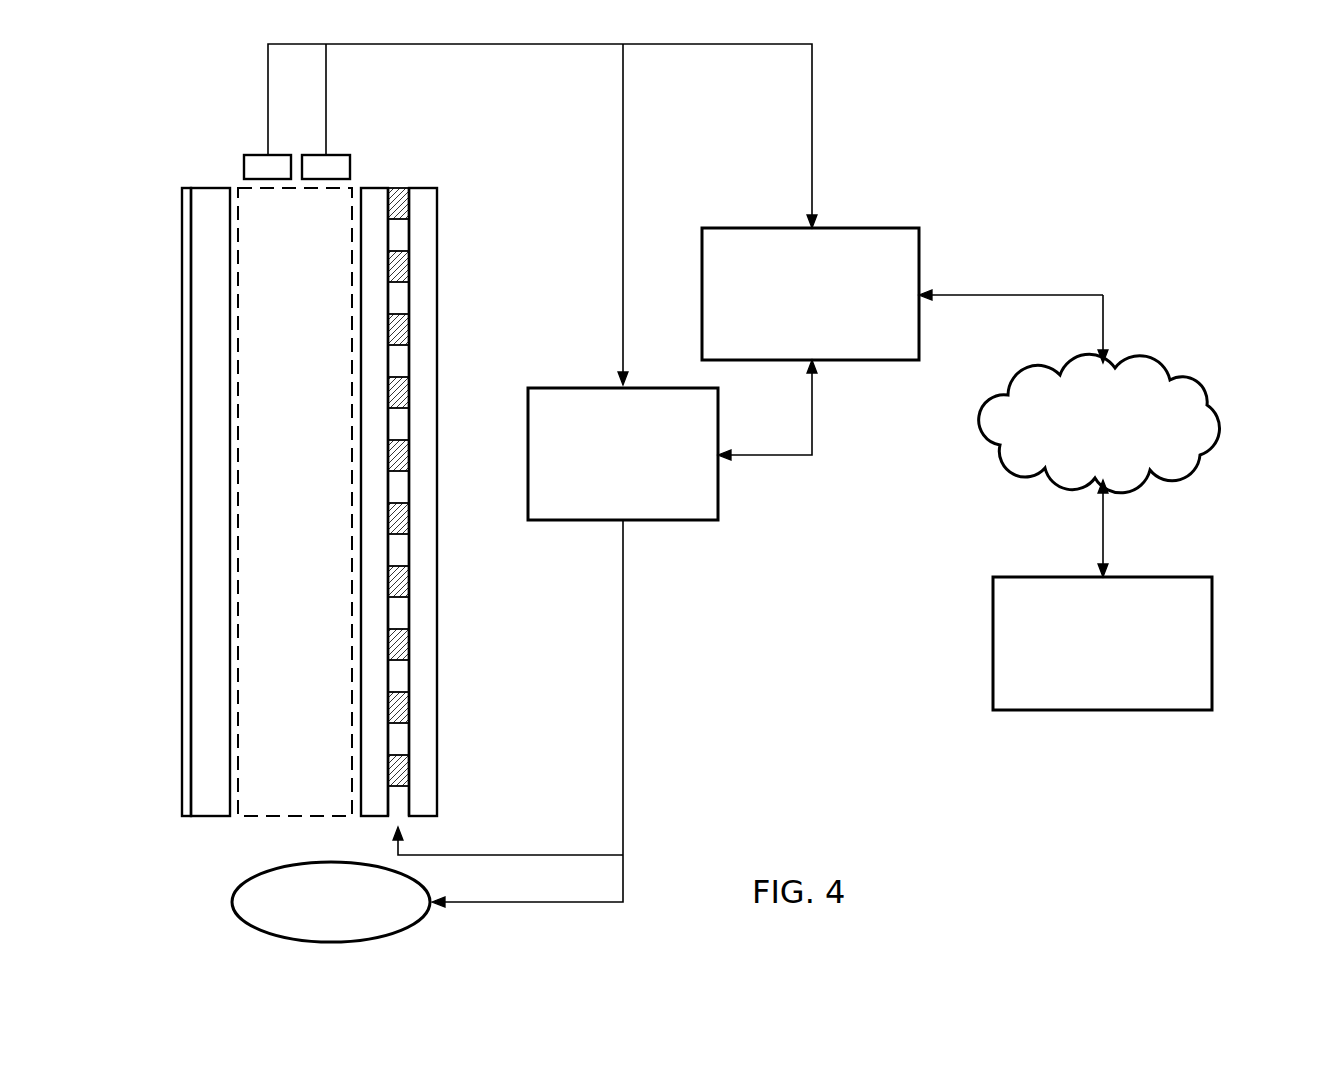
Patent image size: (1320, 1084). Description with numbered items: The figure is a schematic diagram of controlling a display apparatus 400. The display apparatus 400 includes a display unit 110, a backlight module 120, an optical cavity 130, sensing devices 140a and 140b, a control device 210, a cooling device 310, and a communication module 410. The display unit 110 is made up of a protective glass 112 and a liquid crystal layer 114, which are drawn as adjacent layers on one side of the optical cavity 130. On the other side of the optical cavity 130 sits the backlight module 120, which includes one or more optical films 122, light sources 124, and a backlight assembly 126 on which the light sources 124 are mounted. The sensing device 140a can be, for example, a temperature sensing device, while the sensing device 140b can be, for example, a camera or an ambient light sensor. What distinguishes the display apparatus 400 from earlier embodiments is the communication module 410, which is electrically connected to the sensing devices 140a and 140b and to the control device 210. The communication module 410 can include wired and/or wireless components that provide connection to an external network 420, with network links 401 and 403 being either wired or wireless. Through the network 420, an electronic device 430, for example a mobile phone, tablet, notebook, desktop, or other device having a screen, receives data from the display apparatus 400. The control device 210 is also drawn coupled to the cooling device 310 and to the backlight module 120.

The display unit 110 is at (193, 113).
The protective glass 112 is at (190, 188).
The liquid crystal layer 114 is at (210, 188).
The backlight module 120 is at (483, 101).
The optical films 122 is at (368, 188).
The light sources 124 is at (397, 188).
The backlight assembly 126 is at (423, 188).
The optical cavity 130 is at (263, 816).
The sensing device 140a is at (255, 155).
The sensing device 140b is at (314, 155).
The control device 210 is at (672, 520).
The cooling device 310 is at (413, 927).
The display apparatus 400 is at (873, 125).
The network link 401 is at (1030, 292).
The network link 403 is at (1103, 532).
The communication module 410 is at (865, 360).
The external network 420 is at (1172, 363).
The electronic device 430 is at (1212, 645).